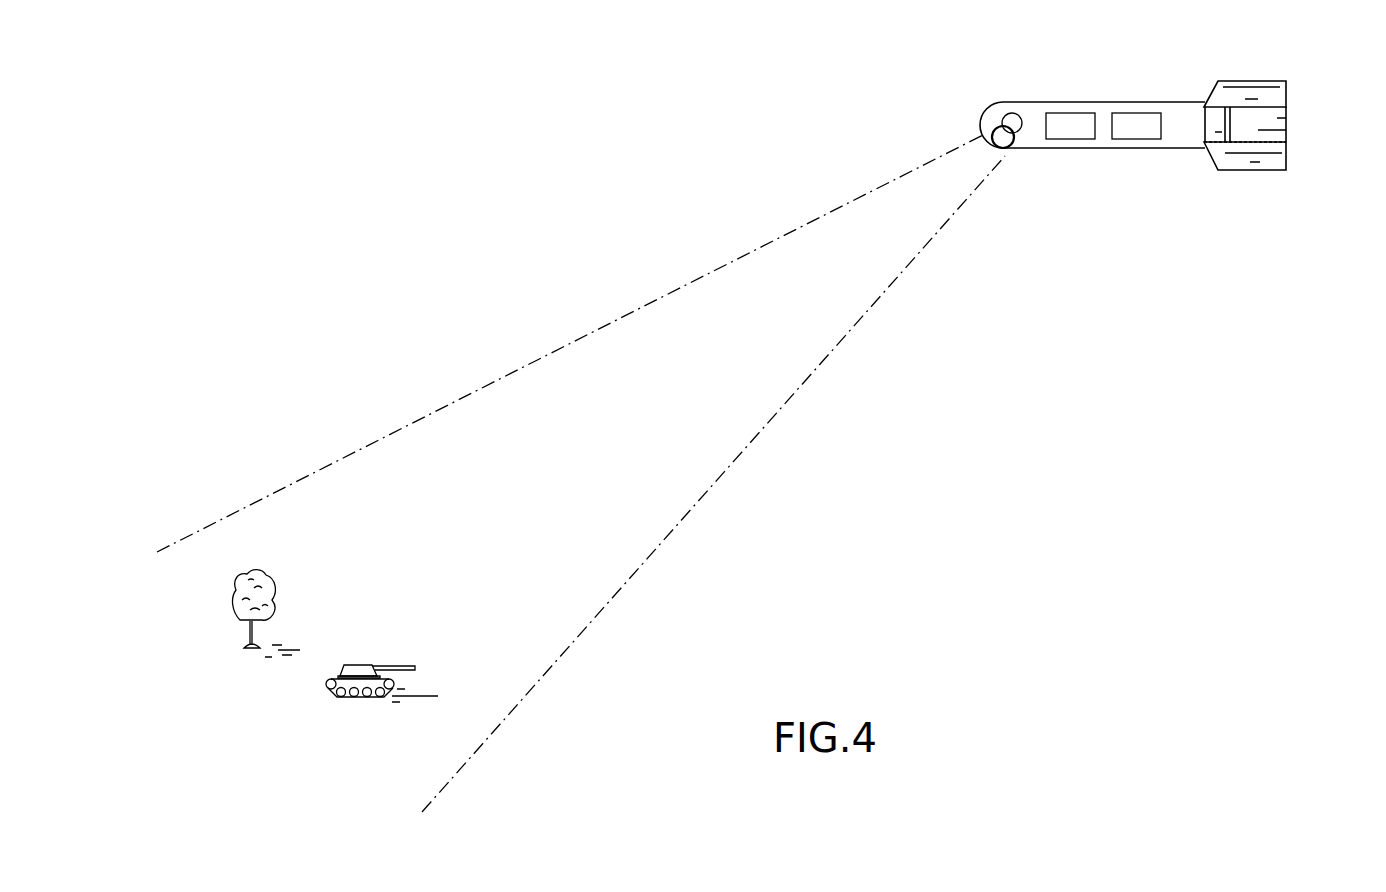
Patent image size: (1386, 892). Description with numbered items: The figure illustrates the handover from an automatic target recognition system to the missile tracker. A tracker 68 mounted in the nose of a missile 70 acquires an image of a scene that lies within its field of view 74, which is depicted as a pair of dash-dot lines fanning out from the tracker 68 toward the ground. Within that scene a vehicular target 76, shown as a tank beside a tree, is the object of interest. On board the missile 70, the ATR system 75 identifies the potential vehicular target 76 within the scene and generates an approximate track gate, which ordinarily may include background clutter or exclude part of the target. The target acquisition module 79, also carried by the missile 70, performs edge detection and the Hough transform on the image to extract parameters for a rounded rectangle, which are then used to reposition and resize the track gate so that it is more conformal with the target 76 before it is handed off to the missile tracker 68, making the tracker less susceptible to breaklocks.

The tracker 68 is at (1000, 137).
The missile 70 is at (1283, 91).
The field of view 74 is at (405, 453).
The ATR system 75 is at (1063, 112).
The vehicular target 76 is at (365, 666).
The target acquisition module 79 is at (1130, 112).